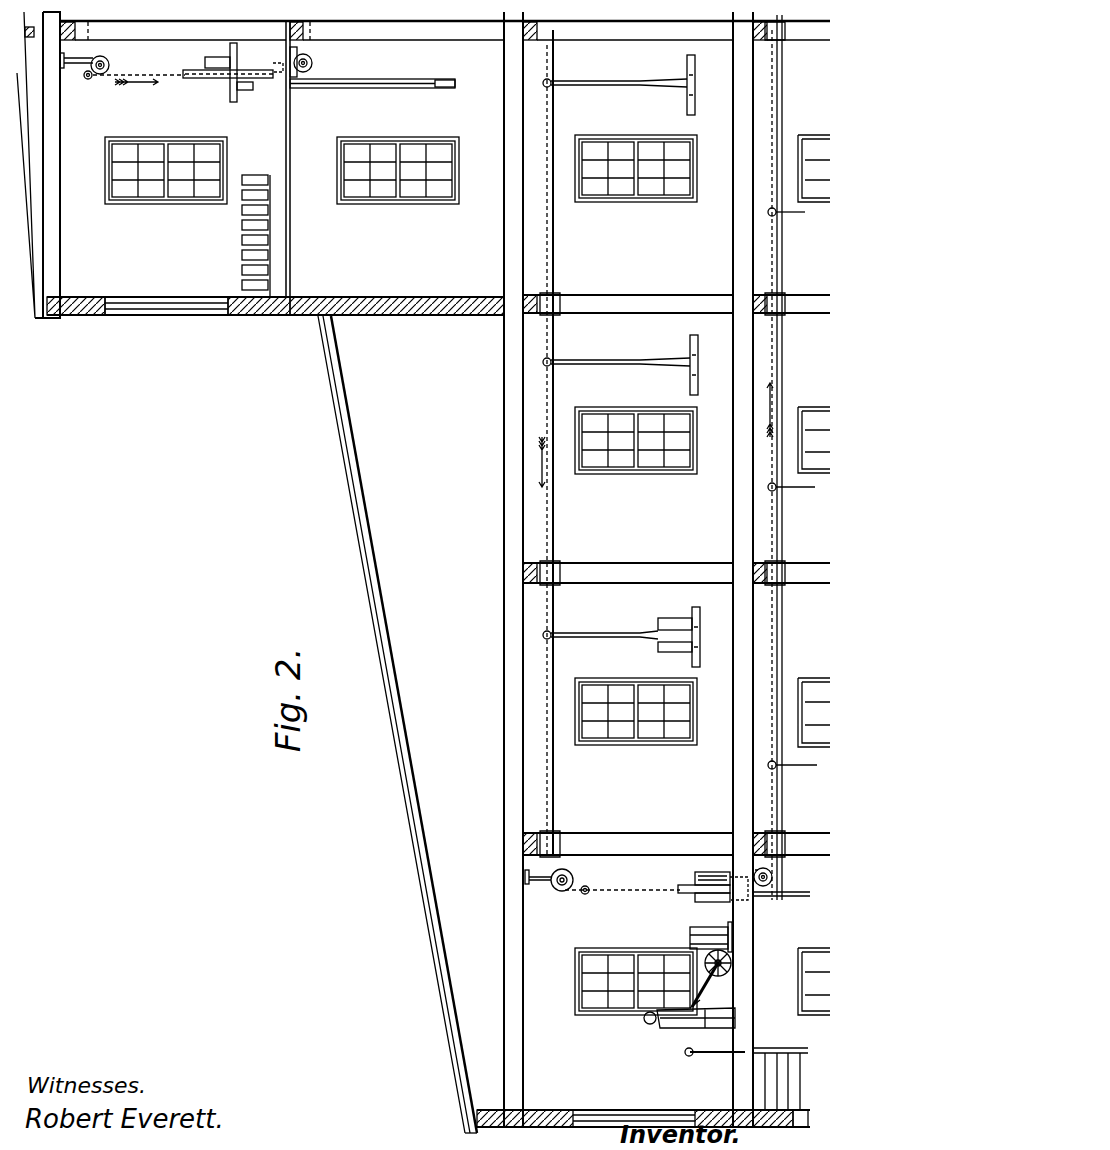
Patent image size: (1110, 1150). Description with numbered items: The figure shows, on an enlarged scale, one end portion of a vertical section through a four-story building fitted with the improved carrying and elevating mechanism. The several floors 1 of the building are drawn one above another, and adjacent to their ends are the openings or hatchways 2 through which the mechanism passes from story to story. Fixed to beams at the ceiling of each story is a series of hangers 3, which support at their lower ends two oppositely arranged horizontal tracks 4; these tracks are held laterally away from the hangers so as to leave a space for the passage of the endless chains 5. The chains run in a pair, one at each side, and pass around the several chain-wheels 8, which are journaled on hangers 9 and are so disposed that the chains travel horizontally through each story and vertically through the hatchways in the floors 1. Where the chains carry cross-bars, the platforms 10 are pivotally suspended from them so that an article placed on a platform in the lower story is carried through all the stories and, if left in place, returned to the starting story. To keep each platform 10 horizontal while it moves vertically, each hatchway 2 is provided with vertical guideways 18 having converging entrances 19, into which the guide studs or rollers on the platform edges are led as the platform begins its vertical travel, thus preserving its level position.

The floors 1 is at (423, 569).
The openings or hatchways 2 is at (413, 878).
The hangers 3 is at (763, 560).
The horizontal tracks 4 is at (562, 772).
The endless chains 5 is at (546, 443).
The chain-wheels 8 is at (667, 877).
The hangers 9 is at (186, 62).
The platforms 10 is at (452, 355).
The vertical guideways 18 is at (465, 474).
The converging entrances 19 is at (700, 873).